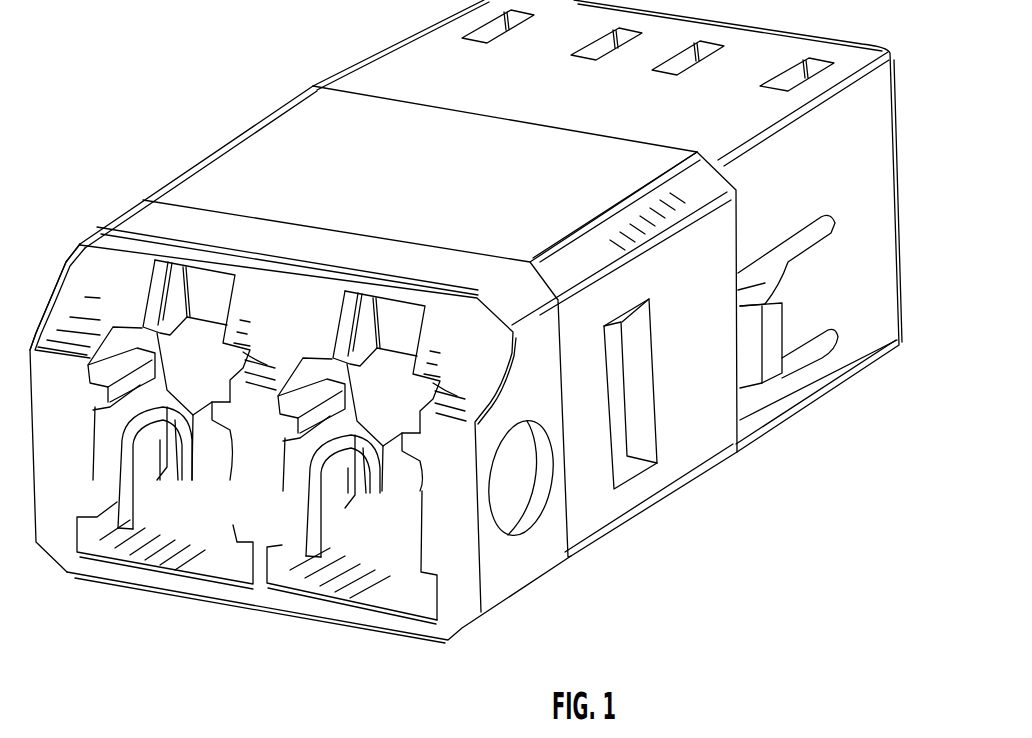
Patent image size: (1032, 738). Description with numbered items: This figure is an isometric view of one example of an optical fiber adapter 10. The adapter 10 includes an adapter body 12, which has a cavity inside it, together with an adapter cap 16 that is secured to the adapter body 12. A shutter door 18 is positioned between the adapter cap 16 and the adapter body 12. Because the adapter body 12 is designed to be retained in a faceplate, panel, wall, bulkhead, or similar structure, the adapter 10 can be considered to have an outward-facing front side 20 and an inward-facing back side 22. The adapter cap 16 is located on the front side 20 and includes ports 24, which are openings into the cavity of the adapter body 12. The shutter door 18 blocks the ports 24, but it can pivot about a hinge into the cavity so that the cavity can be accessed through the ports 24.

The adapter 10 is at (155, 75).
The adapter body 12 is at (292, 100).
The adapter cap 16 is at (80, 245).
The shutter door 18 is at (163, 500).
The front side 20 is at (463, 610).
The back side 22 is at (902, 293).
The ports 24 is at (337, 575).